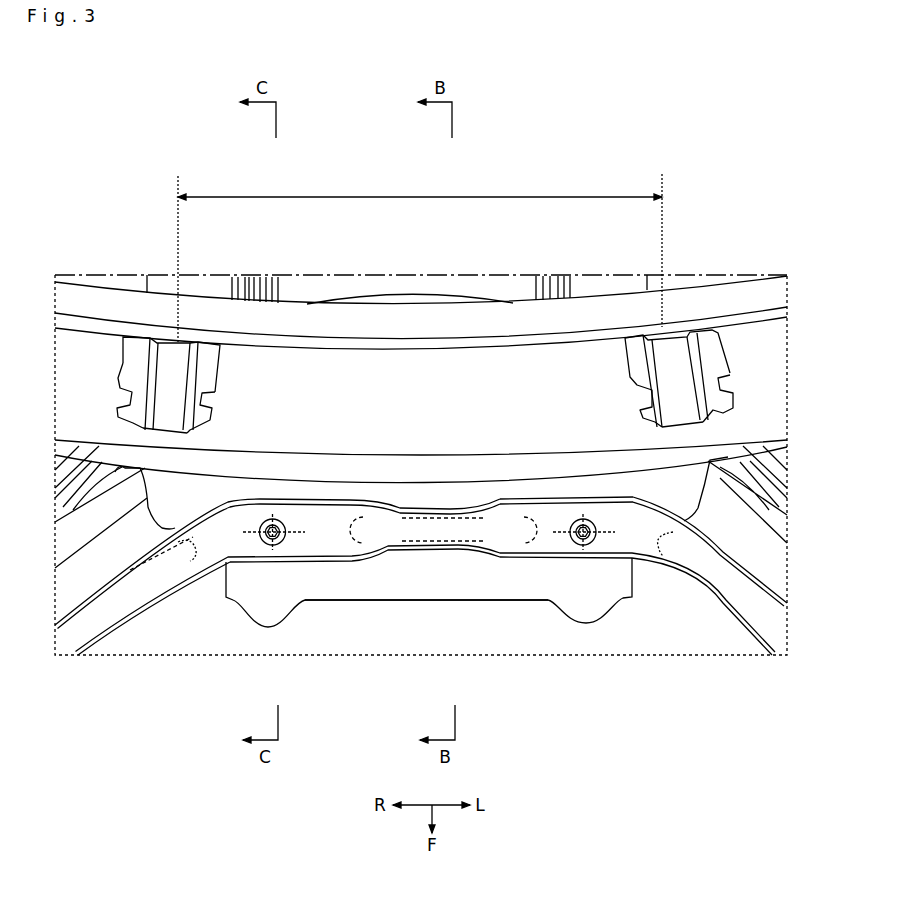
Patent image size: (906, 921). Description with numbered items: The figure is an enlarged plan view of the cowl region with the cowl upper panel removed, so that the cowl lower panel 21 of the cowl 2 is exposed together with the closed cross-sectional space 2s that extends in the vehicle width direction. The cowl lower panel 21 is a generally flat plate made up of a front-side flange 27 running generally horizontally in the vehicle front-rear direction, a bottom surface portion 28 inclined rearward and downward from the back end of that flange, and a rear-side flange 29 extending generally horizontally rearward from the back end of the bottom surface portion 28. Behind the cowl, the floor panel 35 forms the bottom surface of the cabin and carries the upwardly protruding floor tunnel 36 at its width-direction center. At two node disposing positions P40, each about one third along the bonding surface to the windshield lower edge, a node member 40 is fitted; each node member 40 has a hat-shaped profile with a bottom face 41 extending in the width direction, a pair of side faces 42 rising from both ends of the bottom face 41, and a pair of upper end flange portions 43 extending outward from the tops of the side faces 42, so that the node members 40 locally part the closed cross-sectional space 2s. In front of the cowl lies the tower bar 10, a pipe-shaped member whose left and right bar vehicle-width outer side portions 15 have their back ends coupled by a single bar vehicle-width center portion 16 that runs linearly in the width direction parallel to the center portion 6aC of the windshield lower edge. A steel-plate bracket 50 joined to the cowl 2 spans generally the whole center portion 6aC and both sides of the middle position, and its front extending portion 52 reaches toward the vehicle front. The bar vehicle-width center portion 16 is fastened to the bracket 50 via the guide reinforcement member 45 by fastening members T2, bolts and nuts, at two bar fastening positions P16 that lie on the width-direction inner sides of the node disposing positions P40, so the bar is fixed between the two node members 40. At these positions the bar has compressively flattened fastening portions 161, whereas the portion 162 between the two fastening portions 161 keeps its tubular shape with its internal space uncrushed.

The cowl 2 is at (421, 267).
The closed cross-sectional space 2s is at (473, 357).
The center portion of the windshield lower edge 6aC is at (420, 258).
The tower bar 10 is at (355, 557).
The bar vehicle-width outer side portion 15 is at (132, 600).
The bar vehicle-width center portion 16 is at (438, 548).
The fastening portion 161 is at (300, 508).
The portion between the two fastening portions 162 is at (458, 512).
The cowl lower panel 21 is at (337, 303).
The front-side flange 27 is at (405, 465).
The bottom surface portion 28 is at (363, 373).
The rear-side flange 29 is at (453, 316).
The floor panel 35 is at (210, 282).
The floor tunnel 36 is at (295, 285).
The node member 40 is at (425, 361).
The bottom face 41 is at (187, 347).
The side face 42 is at (150, 403).
The upper end flange portion 43 is at (138, 365).
The guide reinforcement member 45 is at (193, 573).
The bracket 50 is at (426, 648).
The front extending portion 52 is at (497, 602).
The bar fastening position P16 is at (274, 508).
The node disposing position P40 is at (133, 325).
The fastening member T2 is at (272, 545).